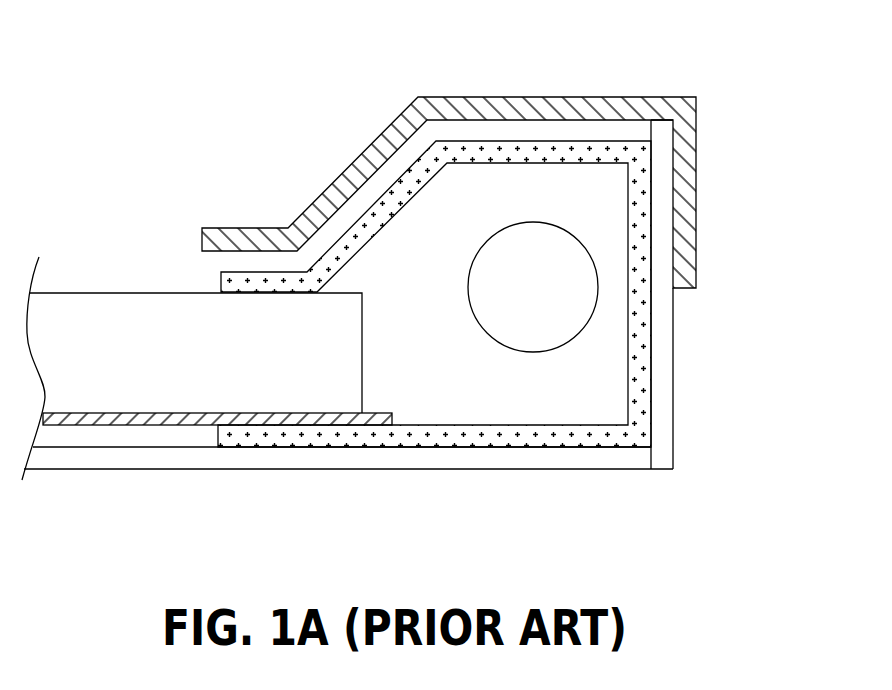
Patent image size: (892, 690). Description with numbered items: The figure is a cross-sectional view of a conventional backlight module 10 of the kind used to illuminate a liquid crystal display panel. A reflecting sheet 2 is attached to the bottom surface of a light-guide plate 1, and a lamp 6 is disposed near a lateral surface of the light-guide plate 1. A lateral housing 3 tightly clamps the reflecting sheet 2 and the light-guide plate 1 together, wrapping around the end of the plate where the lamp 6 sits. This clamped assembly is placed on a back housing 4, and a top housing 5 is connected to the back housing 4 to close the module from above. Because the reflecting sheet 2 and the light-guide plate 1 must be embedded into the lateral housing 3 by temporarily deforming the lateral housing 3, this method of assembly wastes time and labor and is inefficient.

The conventional backlight module 10 is at (47, 42).
The light-guide plate 1 is at (128, 315).
The reflecting sheet 2 is at (107, 425).
The lateral housing 3 is at (645, 324).
The back housing 4 is at (662, 442).
The top housing 5 is at (697, 115).
The lamp 6 is at (533, 329).